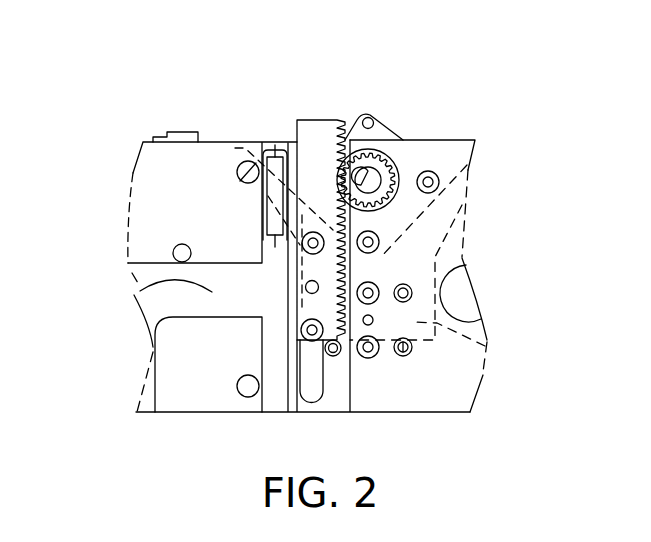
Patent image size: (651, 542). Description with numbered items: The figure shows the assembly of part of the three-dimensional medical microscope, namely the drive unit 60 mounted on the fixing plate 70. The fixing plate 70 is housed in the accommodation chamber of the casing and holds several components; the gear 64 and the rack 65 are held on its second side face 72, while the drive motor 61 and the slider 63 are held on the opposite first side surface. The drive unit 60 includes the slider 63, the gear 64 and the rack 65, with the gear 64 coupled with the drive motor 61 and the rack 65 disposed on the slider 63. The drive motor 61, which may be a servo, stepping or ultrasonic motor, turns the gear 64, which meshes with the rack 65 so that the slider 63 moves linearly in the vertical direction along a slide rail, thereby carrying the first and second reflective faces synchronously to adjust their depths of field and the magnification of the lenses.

The drive unit 60 is at (353, 86).
The drive motor 61 is at (377, 118).
The slider 63 is at (485, 346).
The gear 64 is at (400, 172).
The rack 65 is at (317, 135).
The fixing plate 70 is at (213, 132).
The second side face 72 is at (140, 291).